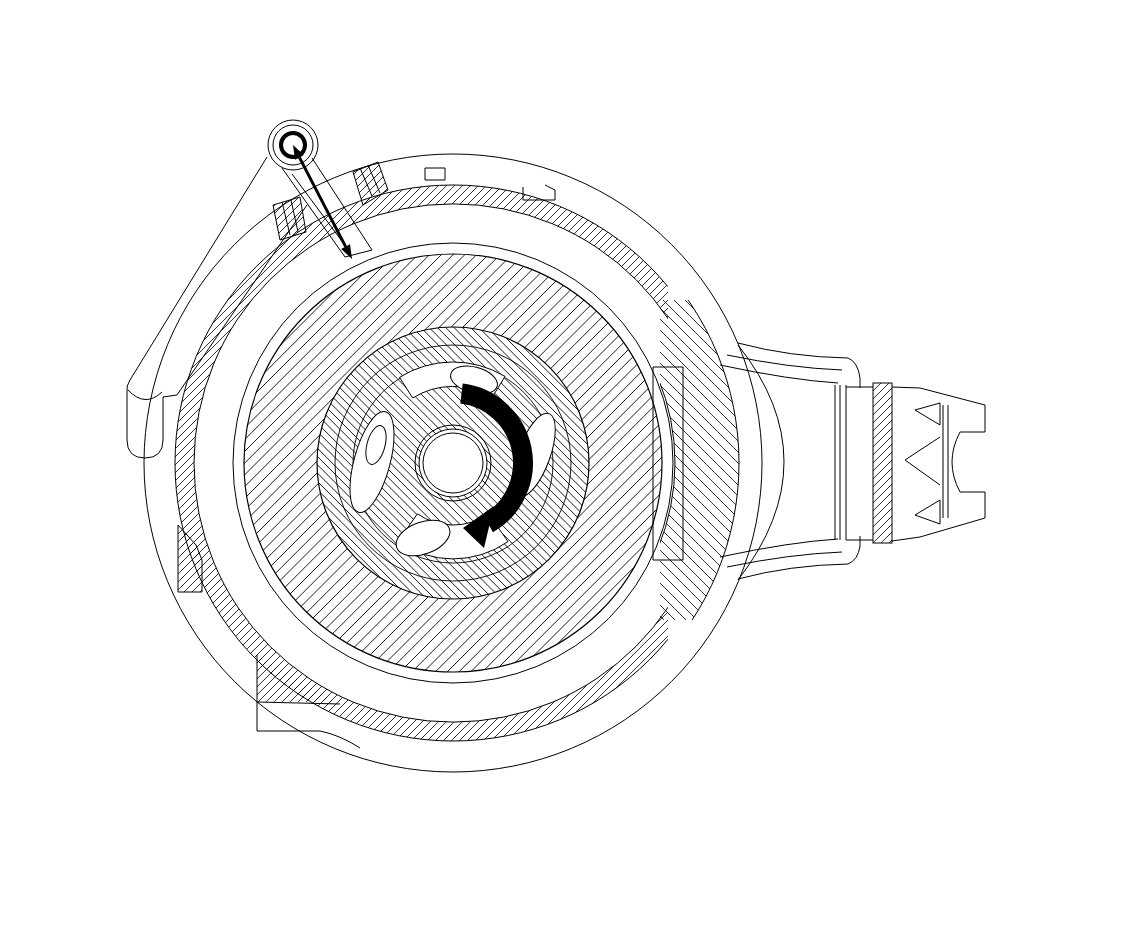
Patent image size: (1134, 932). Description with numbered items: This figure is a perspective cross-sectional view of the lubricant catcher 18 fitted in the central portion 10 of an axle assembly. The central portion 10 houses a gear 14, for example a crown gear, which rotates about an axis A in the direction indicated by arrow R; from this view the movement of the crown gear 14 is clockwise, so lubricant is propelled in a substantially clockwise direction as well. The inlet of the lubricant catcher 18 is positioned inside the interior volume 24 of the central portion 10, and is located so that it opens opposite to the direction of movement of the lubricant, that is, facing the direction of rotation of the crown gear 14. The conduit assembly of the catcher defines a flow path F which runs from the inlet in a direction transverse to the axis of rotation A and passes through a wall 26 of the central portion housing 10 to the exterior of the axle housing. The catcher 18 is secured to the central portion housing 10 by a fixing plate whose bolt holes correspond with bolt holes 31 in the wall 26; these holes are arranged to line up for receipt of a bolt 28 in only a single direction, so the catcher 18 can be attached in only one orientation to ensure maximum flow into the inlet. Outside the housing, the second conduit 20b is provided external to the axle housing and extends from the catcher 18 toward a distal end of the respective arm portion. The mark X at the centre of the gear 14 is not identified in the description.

The central portion 10 is at (671, 188).
The gear 14 is at (300, 582).
The lubricant catcher 18 is at (272, 115).
The second conduit 20b is at (168, 355).
The interior volume 24 is at (489, 233).
The wall 26 is at (577, 228).
The bolt 28 is at (278, 207).
The bolt holes 31 is at (372, 192).
The axis A is at (450, 472).
The flow path F is at (325, 190).
The arrow R is at (492, 471).
The center point X is at (452, 463).